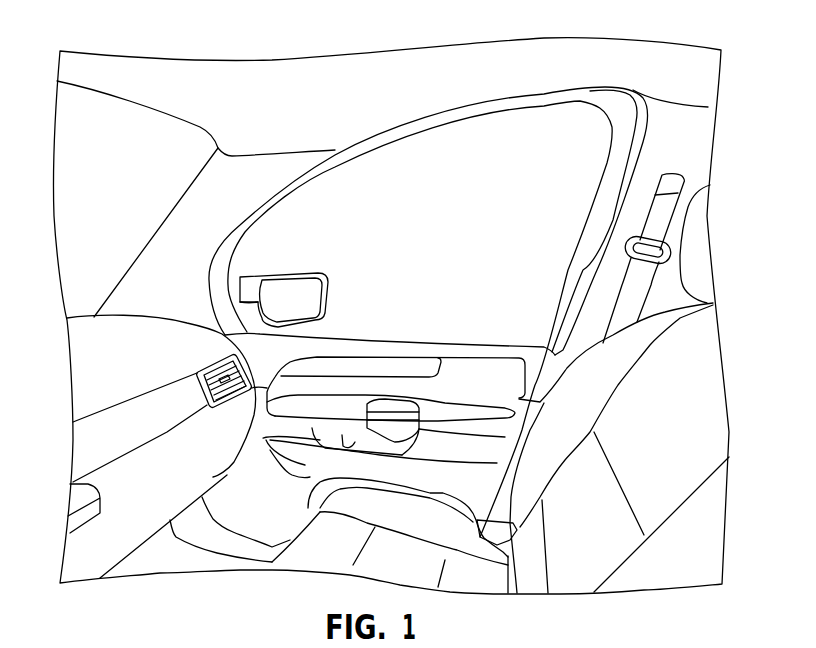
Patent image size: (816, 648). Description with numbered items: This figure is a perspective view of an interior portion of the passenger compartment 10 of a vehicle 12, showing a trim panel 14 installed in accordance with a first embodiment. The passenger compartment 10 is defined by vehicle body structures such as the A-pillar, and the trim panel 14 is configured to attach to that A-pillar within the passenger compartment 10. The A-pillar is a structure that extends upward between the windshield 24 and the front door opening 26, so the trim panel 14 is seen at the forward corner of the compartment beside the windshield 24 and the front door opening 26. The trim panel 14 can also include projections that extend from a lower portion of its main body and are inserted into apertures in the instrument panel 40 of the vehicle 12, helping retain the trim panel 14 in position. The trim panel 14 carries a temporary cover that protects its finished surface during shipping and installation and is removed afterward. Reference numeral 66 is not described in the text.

The passenger compartment 10 is at (646, 70).
The vehicle 12 is at (243, 61).
The trim panel 14 is at (230, 193).
The windshield 24 is at (95, 212).
The front door opening 26 is at (379, 147).
The instrument panel 40 is at (147, 348).
The headliner 66 is at (412, 68).